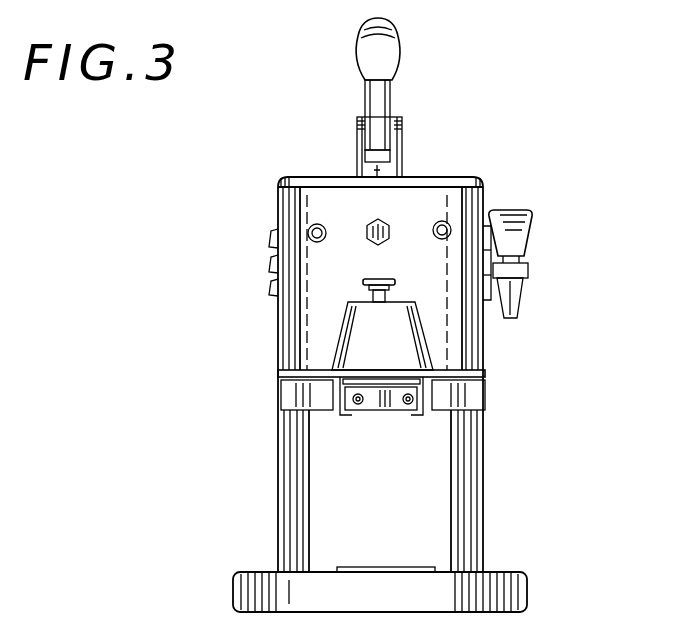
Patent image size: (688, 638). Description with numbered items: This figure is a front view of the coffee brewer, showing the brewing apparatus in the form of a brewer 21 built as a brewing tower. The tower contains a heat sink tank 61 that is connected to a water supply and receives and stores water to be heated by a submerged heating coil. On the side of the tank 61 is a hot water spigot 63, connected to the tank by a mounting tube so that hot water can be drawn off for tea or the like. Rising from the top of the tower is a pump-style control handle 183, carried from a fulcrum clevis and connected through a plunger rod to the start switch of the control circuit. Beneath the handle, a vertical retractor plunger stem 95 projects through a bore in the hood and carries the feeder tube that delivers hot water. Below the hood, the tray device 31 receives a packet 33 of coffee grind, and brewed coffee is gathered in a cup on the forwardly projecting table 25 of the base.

The control handle 183 is at (390, 95).
The retractor plunger stem 95 is at (377, 277).
The hot water spigot 63 is at (508, 301).
The heat sink tank 61 is at (485, 345).
The brewer 21 is at (494, 386).
The tray device 31 is at (341, 418).
The packet 33 is at (398, 418).
The table 25 is at (529, 583).